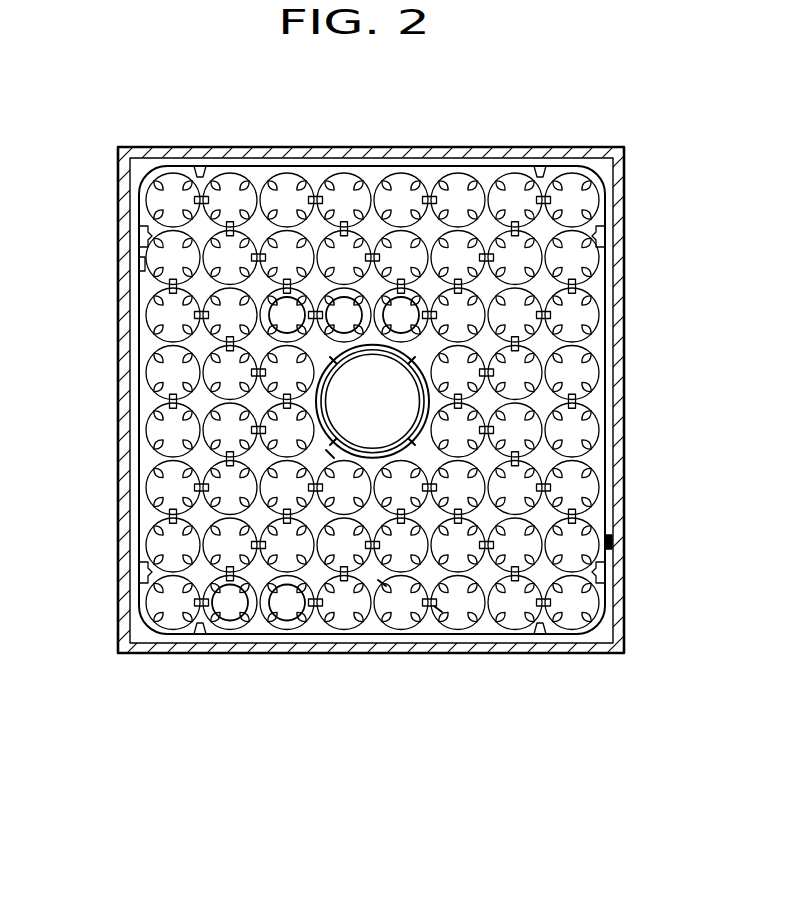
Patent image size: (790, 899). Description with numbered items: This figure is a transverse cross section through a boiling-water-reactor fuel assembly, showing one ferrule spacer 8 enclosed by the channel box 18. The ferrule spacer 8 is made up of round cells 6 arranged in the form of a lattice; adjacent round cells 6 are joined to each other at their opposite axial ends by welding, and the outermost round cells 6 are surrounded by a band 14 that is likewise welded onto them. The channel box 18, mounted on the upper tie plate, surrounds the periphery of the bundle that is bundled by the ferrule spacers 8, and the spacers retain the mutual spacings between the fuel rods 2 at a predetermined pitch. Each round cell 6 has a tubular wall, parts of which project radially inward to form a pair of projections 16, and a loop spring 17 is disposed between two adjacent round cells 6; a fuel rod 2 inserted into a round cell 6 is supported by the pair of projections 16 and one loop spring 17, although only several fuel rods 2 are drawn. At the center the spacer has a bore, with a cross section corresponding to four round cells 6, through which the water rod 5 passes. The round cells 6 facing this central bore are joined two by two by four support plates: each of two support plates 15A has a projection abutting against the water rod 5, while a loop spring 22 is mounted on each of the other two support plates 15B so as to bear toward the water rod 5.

The fuel rod 2 is at (287, 622).
The water rod 5 is at (336, 426).
The round cell 6 is at (150, 377).
The ferrule spacer 8 is at (586, 114).
The band 14 is at (308, 164).
The support plate 15A is at (404, 302).
The support plate 15B is at (295, 328).
The projection 16 is at (383, 583).
The loop spring 17 is at (437, 610).
The channel box 18 is at (626, 508).
The loop spring 22 is at (337, 447).